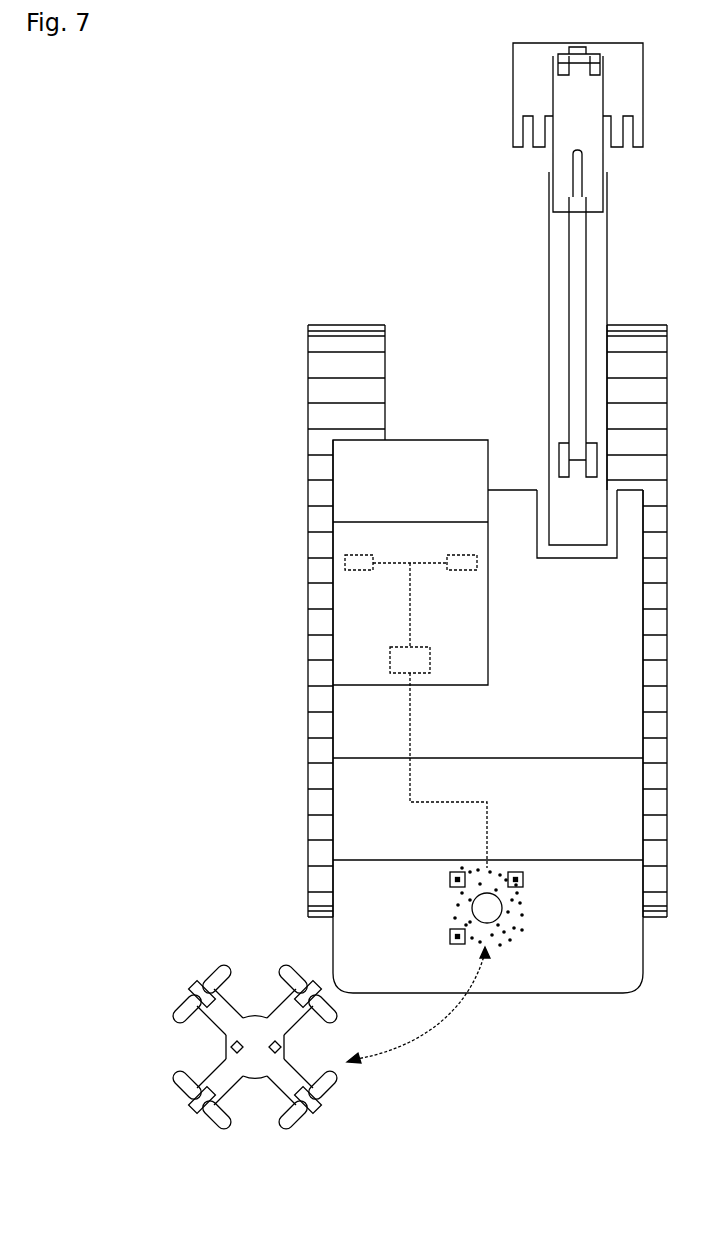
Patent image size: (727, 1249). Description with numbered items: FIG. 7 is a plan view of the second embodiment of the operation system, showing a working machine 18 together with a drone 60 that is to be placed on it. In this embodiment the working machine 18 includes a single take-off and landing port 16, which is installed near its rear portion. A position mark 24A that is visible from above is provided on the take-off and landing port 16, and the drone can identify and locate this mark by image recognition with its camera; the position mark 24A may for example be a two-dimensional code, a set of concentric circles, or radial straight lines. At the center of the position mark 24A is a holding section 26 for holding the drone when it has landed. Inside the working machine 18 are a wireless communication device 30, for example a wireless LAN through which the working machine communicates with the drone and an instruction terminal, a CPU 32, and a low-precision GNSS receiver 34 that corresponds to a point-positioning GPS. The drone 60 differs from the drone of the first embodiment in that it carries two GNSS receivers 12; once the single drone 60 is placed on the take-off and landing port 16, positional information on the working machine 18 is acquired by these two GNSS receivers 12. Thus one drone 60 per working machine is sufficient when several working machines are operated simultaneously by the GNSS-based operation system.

The GNSS receiver 12 is at (228, 1047).
The take-off and landing port 16 is at (493, 957).
The working machine 18 is at (466, 218).
The position mark 24A is at (450, 936).
The holding section 26 is at (485, 908).
The wireless communication device 30 is at (345, 562).
The CPU 32 is at (430, 657).
The low-precision GNSS receiver 34 is at (477, 565).
The drone 60 is at (251, 962).